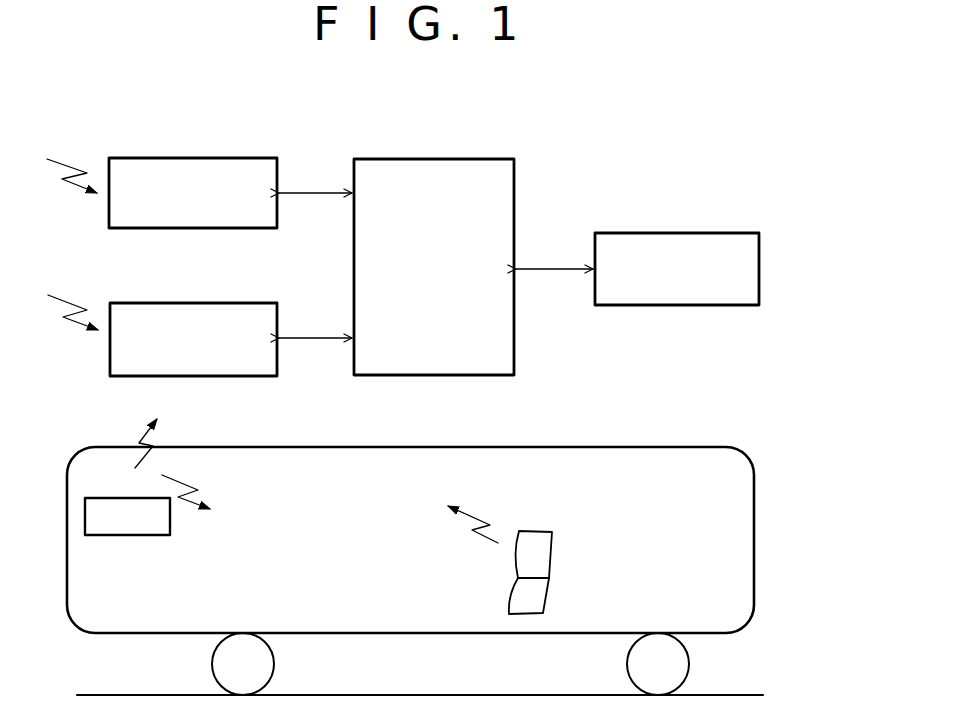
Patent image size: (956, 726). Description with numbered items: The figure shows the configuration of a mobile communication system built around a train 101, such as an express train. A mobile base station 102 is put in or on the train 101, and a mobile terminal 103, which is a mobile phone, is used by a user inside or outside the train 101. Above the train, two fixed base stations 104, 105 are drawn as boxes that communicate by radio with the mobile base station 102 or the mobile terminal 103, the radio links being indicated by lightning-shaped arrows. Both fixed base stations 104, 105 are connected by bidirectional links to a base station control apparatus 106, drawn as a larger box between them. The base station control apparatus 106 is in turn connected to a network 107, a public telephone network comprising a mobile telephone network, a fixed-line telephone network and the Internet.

The train 101 is at (755, 538).
The mobile base station 102 is at (171, 521).
The mobile terminal 103 is at (550, 594).
The fixed base station 104 is at (192, 157).
The fixed base station 105 is at (192, 302).
The base station control apparatus 106 is at (432, 159).
The network 107 is at (677, 232).